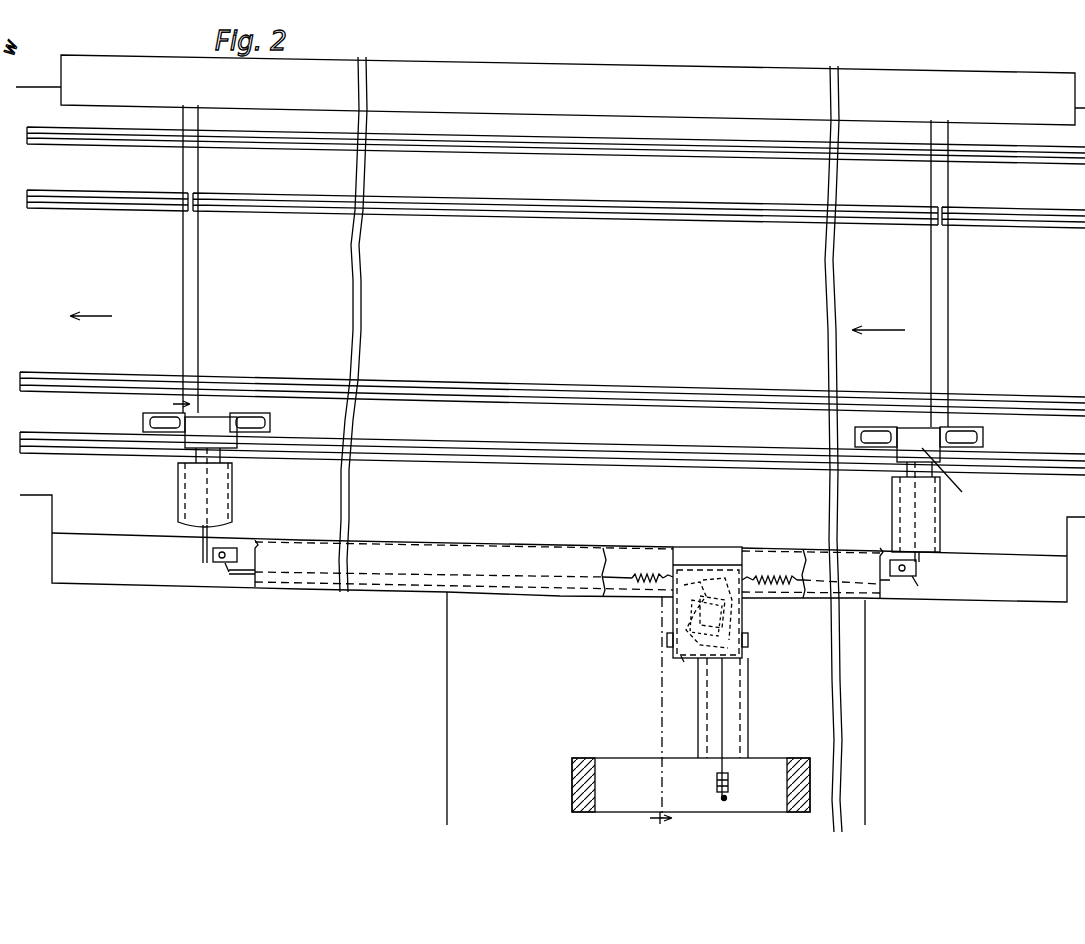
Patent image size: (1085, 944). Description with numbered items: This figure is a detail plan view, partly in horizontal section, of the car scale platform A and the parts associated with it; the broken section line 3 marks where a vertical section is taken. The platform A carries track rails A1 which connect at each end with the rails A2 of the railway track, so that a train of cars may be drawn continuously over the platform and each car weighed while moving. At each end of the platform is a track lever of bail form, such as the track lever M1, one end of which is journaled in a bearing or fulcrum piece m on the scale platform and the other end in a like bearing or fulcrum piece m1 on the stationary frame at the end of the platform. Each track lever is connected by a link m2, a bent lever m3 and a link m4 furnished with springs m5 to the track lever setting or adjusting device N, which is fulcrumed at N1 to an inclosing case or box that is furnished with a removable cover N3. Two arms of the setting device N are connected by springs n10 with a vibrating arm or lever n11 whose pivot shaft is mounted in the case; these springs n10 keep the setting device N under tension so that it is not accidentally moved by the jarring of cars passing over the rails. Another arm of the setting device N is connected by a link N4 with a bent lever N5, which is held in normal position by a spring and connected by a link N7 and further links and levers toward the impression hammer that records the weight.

The platform A is at (345, 277).
The track rails A1 is at (345, 214).
The rails of the railway track A2 is at (143, 204).
The track lever M1 is at (912, 436).
The bearing or fulcrum piece m is at (258, 421).
The bearing or fulcrum piece m1 is at (143, 422).
The link m2 is at (205, 486).
The bent lever m3 is at (212, 562).
The link m4 is at (242, 576).
The springs m5 is at (648, 584).
The track lever setting device N is at (697, 562).
The fulcrum N1 is at (712, 596).
The removable cover N3 is at (740, 613).
The link N4 is at (723, 713).
The bent lever N5 is at (716, 789).
The link N7 is at (727, 800).
The springs n10 is at (667, 636).
The vibrating arm or lever n11 is at (681, 660).
The section line 3 is at (422, 613).